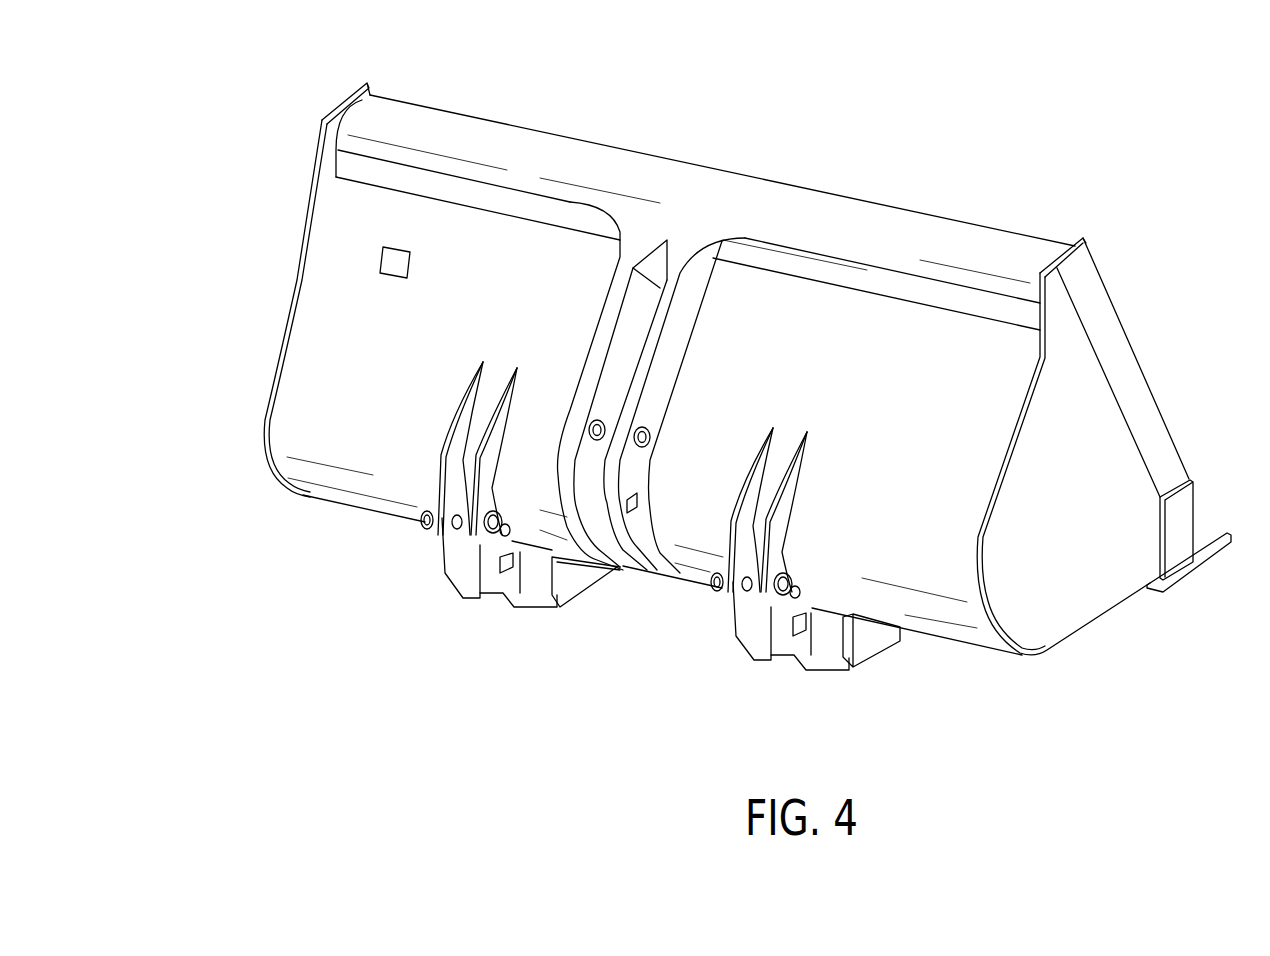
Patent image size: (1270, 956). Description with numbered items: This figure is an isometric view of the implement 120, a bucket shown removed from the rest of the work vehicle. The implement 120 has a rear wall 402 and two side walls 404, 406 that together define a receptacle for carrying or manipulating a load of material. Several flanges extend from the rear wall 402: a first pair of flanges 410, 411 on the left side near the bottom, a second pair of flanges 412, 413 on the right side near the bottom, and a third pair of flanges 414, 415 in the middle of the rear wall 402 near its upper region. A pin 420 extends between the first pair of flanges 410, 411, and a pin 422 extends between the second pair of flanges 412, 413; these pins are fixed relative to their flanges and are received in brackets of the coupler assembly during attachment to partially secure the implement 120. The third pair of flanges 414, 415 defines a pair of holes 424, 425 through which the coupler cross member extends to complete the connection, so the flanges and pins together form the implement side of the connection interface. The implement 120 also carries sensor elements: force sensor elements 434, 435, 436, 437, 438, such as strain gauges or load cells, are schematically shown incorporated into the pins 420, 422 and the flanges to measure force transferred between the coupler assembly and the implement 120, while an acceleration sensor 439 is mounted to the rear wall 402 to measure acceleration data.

The implement 120 is at (254, 86).
The rear wall 402 is at (302, 349).
The side wall 404 is at (299, 270).
The side wall 406 is at (1095, 412).
The flange 410 is at (453, 435).
The flange 411 is at (480, 465).
The flange 412 is at (750, 503).
The flange 413 is at (780, 533).
The flange 414 is at (603, 323).
The flange 415 is at (683, 300).
The pin 420 is at (450, 587).
The pin 422 is at (747, 643).
The hole 424 is at (597, 420).
The hole 425 is at (653, 417).
The force sensor element 434 is at (447, 537).
The force sensor element 435 is at (508, 573).
The force sensor element 436 is at (740, 610).
The force sensor element 437 is at (797, 643).
The force sensor element 438 is at (640, 503).
The acceleration sensor 439 is at (413, 267).